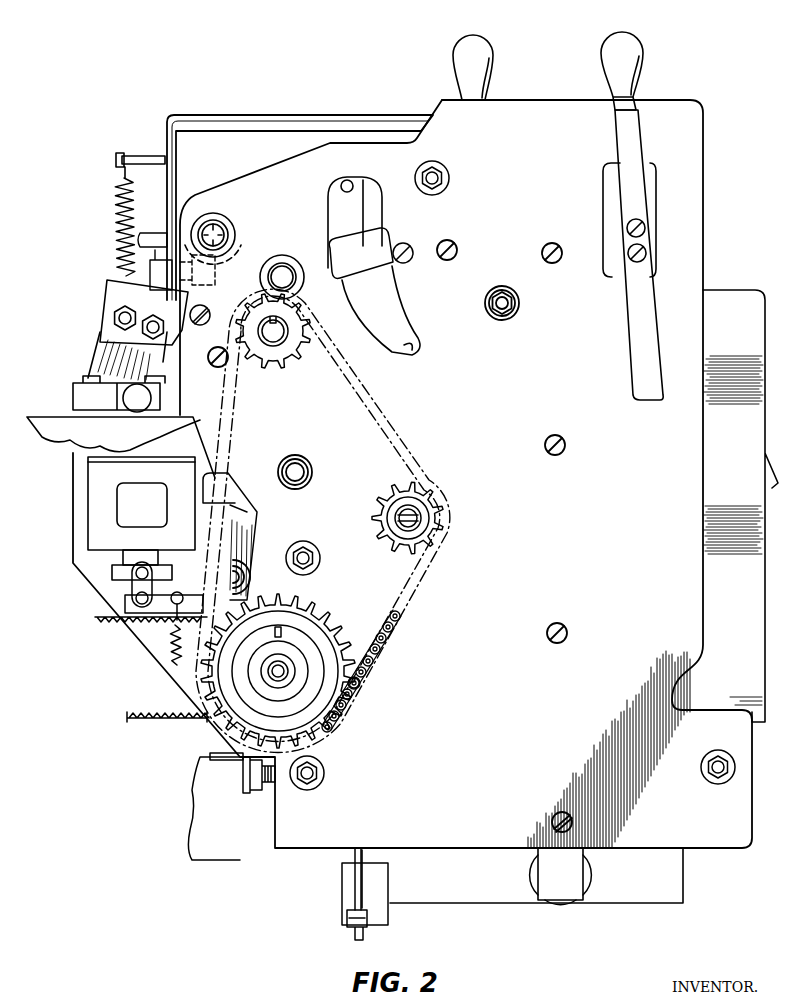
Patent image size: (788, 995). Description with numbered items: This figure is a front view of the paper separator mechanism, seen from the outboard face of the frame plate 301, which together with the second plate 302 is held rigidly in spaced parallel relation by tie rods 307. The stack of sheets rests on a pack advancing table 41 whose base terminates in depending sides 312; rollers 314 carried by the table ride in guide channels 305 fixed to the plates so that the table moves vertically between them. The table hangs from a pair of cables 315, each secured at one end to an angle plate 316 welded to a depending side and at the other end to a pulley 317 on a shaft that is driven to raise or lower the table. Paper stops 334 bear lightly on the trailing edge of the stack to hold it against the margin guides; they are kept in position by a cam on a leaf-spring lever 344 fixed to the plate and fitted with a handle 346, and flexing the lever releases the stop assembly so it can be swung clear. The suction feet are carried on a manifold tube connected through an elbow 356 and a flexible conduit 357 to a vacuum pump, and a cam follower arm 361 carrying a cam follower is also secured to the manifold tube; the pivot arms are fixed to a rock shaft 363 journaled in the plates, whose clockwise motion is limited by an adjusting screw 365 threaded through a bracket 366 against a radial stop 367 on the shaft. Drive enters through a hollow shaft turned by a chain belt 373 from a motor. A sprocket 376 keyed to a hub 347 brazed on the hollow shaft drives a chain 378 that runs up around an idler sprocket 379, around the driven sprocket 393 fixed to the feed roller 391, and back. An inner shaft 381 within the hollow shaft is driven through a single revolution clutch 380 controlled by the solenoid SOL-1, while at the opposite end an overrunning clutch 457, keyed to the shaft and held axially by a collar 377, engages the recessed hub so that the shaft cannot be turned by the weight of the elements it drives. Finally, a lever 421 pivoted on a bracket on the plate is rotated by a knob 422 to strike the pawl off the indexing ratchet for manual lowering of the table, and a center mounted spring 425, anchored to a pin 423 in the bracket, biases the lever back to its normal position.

The plate 301 is at (706, 842).
The plate 302 is at (106, 349).
The guide channels 305 is at (584, 898).
The tie rods 307 is at (449, 180).
The depending sides 312 is at (430, 904).
The rollers 314 is at (537, 869).
The cables 315 is at (355, 888).
The angle plate 316 is at (385, 913).
The pulley 317 is at (250, 505).
The paper stops 334 is at (710, 300).
The lever 344 is at (638, 320).
The handle 346 is at (643, 47).
The hub 347 is at (307, 652).
The elbow 356 is at (408, 248).
The flexible conduit 357 is at (393, 303).
The cam follower arm 361 is at (336, 204).
The rock shaft 363 is at (222, 234).
The adjusting screw 365 is at (190, 283).
The bracket 366 is at (170, 282).
The radial stop 367 is at (224, 258).
The chain belt 373 is at (165, 724).
The sprocket 376 is at (336, 623).
The collar 377 is at (287, 693).
The chain 378 is at (362, 686).
The idler sprocket 379 is at (386, 502).
The single revolution clutch 380 is at (104, 598).
The shaft 381 is at (283, 658).
The feed roller 391 is at (273, 348).
The driven sprocket 393 is at (284, 372).
The table 41 is at (649, 914).
The lever 421 is at (328, 115).
The knob 422 is at (493, 46).
The pin 423 is at (152, 157).
The spring 425 is at (122, 262).
The overrunning clutch 457 is at (299, 677).
The solenoid SOL-1 is at (92, 497).